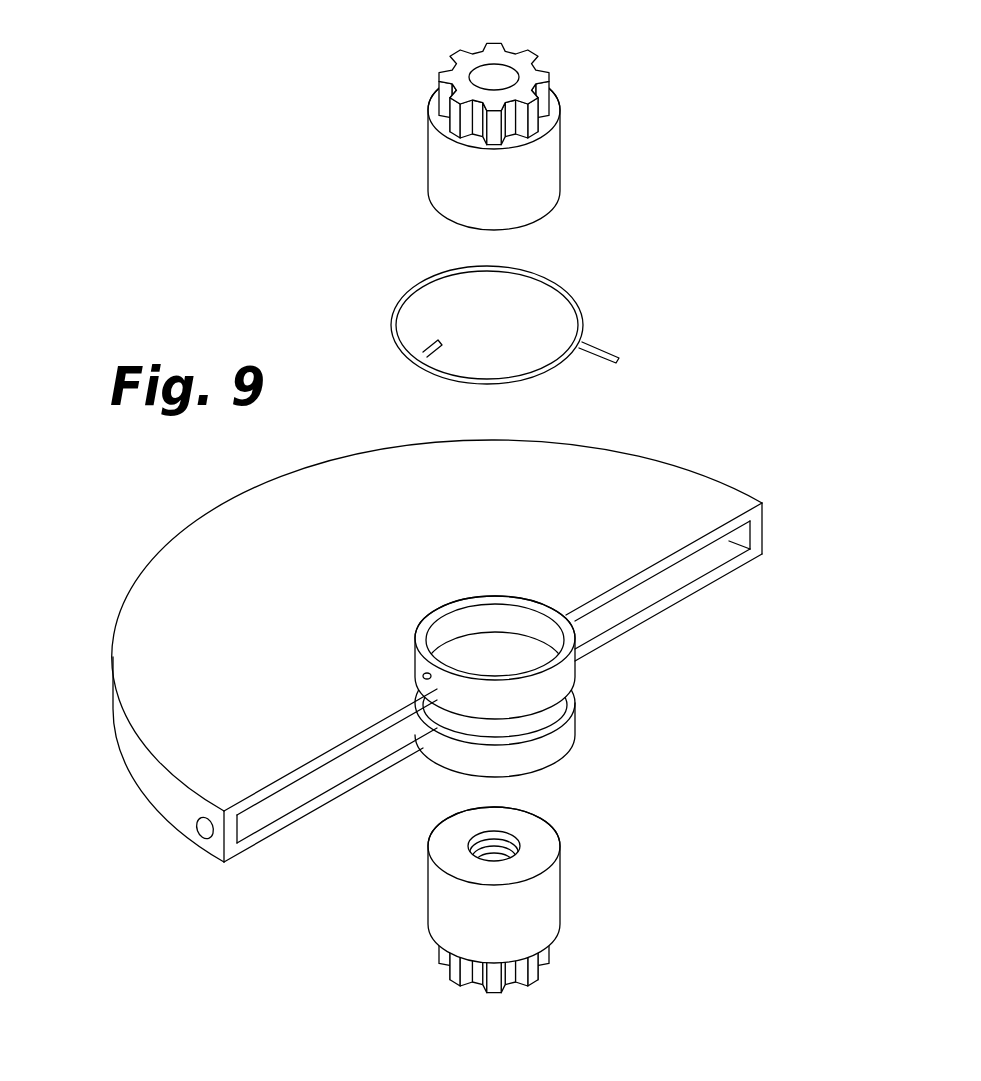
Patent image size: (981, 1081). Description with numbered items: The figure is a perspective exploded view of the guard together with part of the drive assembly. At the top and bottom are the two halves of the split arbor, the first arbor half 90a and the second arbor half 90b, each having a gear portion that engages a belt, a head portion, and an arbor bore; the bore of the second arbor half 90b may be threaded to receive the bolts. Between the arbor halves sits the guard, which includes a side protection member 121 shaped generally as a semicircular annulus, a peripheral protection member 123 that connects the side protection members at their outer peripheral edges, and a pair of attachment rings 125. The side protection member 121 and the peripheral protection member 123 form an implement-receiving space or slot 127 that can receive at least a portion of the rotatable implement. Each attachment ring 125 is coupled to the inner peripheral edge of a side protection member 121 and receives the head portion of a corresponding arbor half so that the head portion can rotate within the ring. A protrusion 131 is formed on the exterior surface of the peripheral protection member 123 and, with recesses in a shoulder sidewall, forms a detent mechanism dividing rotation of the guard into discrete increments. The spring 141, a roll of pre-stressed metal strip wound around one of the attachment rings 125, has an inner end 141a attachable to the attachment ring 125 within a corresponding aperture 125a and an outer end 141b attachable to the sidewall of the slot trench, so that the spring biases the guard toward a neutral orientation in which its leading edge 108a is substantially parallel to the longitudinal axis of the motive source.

The first arbor half 90a is at (560, 148).
The second arbor half 90b is at (560, 884).
The spring 141 is at (388, 326).
The inner end of the spring 141a is at (438, 338).
The outer end of the spring 141b is at (621, 351).
The side protection member 121 is at (651, 482).
The leading edge of the guard 108a is at (707, 537).
The attachment ring 125 is at (492, 596).
The aperture 125a is at (422, 680).
The implement-receiving space or slot 127 is at (647, 592).
The peripheral protection member 123 is at (145, 779).
The protrusion 131 is at (196, 842).